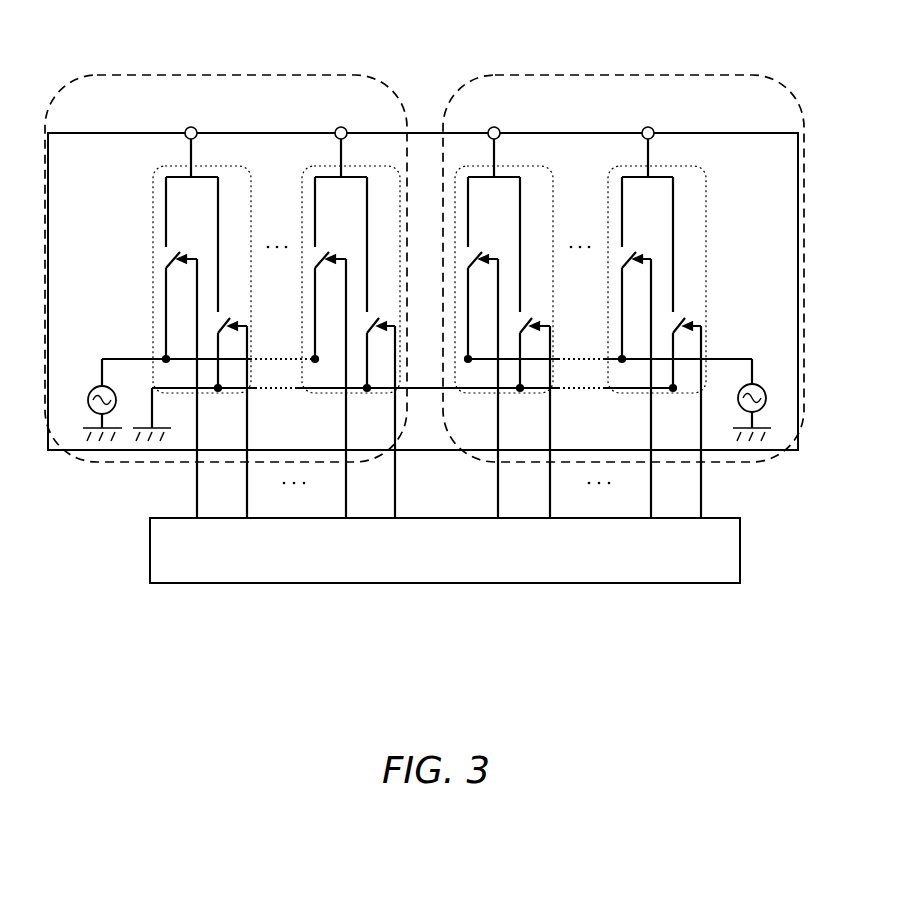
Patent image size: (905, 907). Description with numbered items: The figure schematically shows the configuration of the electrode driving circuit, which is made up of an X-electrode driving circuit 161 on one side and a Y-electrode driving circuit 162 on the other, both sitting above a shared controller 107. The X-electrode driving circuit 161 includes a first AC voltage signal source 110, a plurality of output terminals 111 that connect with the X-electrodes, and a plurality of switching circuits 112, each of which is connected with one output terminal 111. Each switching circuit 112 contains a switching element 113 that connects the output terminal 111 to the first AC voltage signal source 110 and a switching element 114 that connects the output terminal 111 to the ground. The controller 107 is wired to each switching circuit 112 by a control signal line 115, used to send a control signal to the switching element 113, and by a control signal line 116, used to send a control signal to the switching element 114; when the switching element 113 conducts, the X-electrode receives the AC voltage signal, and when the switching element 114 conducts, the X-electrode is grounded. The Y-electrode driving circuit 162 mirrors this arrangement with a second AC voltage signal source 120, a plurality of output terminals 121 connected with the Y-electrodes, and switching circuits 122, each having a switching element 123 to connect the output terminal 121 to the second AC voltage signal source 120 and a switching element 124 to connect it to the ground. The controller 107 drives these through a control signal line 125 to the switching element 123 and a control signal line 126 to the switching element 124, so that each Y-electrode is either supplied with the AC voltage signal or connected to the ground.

The controller 107 is at (445, 550).
The first AC voltage signal source 110 is at (98, 387).
The output terminal 111 is at (197, 128).
The switching circuit 112 is at (153, 197).
The switching element 113 is at (165, 267).
The switching element 114 is at (218, 333).
The control signal line 115 is at (197, 503).
The control signal line 116 is at (247, 495).
The second AC voltage signal source 120 is at (760, 385).
The output terminal 121 is at (648, 128).
The switching circuit 122 is at (706, 196).
The switching element 123 is at (634, 254).
The switching element 124 is at (684, 328).
The control signal line 125 is at (652, 492).
The control signal line 126 is at (701, 510).
The X-electrode driving circuit 161 is at (197, 77).
The Y-electrode driving circuit 162 is at (548, 76).